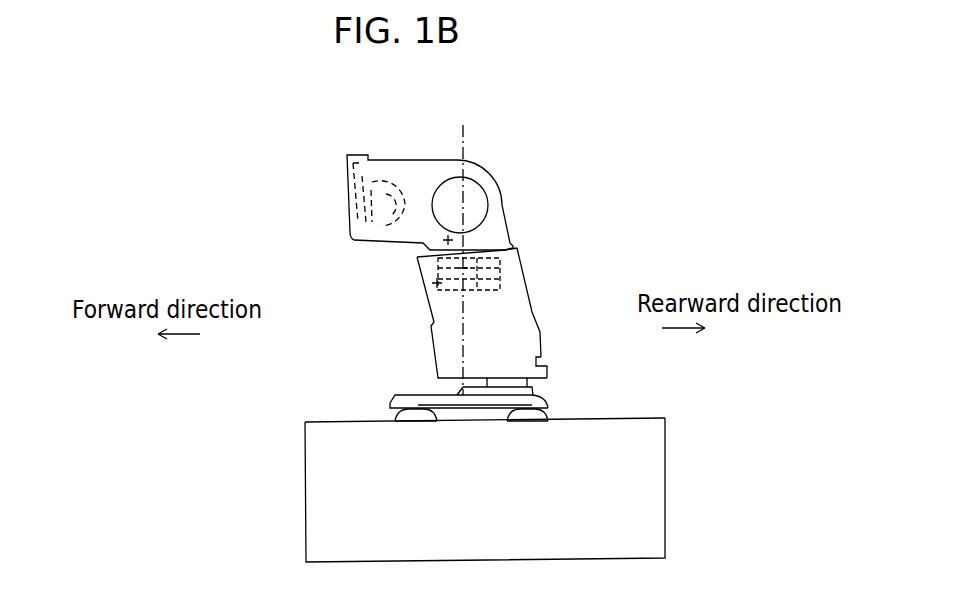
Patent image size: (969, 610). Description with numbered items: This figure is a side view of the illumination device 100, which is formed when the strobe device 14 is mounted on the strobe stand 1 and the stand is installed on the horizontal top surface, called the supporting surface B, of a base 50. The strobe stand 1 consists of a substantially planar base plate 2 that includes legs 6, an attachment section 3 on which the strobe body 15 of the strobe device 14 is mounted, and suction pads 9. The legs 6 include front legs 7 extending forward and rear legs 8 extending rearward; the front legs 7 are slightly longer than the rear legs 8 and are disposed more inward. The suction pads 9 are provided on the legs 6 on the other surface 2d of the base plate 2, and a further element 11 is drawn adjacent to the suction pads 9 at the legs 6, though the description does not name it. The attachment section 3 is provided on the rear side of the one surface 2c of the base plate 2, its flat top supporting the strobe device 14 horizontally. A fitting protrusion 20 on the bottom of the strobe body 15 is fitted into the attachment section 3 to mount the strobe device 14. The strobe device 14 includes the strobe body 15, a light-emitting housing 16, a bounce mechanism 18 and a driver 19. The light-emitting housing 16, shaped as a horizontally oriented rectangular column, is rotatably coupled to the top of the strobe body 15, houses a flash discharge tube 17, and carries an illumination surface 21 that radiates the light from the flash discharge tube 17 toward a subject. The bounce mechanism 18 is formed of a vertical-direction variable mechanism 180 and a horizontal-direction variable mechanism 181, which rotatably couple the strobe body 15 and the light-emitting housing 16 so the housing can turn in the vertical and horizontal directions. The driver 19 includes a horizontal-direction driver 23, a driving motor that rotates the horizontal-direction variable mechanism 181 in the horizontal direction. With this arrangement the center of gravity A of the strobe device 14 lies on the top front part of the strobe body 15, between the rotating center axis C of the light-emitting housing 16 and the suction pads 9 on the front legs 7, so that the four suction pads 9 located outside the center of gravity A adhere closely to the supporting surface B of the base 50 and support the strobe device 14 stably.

The illumination device 100 is at (197, 97).
The strobe stand 1 is at (388, 392).
The base plate 2 is at (418, 400).
The one surface of base plate 2c is at (435, 393).
The other surface of base plate 2d is at (483, 403).
The attachment section 3 is at (535, 385).
The legs 6 is at (460, 400).
The front legs 7 is at (388, 398).
The rear legs 8 is at (537, 400).
The suction pads 9 is at (535, 417).
The leg contact portion 11 is at (520, 417).
The strobe device 14 is at (528, 298).
The strobe body 15 is at (433, 310).
The light-emitting housing 16 is at (503, 200).
The flash discharge tube 17 is at (382, 190).
The bounce mechanism 18 is at (518, 240).
The vertical-direction variable mechanism 180 is at (472, 193).
The horizontal-direction variable mechanism 181 is at (517, 258).
The driver 19 is at (437, 283).
The horizontal-direction driver 23 is at (466, 274).
The fitting protrusion 20 is at (508, 382).
The illumination surface 21 is at (350, 188).
The base 50 is at (648, 487).
The center of gravity A is at (448, 240).
The supporting surface B is at (640, 417).
The rotating center axis C is at (465, 138).